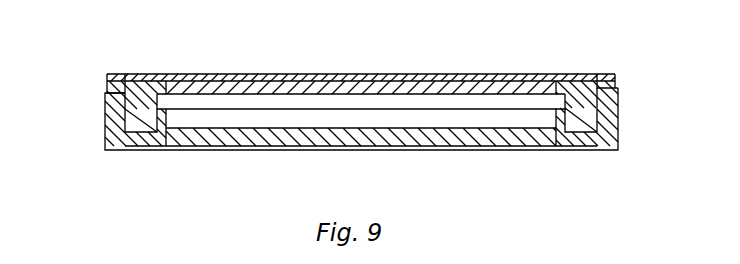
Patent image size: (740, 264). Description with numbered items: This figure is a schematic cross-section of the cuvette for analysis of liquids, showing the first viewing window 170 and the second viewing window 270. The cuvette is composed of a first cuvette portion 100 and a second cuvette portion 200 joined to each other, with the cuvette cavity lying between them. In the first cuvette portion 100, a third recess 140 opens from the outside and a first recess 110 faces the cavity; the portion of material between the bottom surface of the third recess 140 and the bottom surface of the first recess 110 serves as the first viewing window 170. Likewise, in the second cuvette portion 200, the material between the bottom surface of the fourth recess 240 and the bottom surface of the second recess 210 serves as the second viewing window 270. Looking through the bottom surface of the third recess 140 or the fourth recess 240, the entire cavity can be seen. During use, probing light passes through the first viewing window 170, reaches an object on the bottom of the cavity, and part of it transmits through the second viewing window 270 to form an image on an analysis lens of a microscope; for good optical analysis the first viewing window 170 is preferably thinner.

The first cuvette portion 100 is at (143, 74).
The first viewing window 170 is at (268, 74).
The first recess 110 is at (432, 108).
The third recess 140 is at (514, 78).
The second cuvette portion 200 is at (160, 150).
The second recess 210 is at (231, 126).
The second viewing window 270 is at (286, 142).
The fourth recess 240 is at (506, 150).